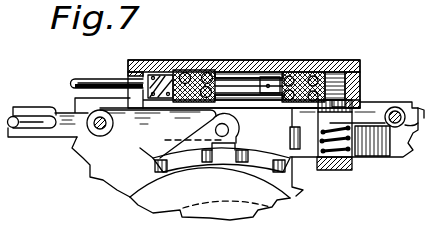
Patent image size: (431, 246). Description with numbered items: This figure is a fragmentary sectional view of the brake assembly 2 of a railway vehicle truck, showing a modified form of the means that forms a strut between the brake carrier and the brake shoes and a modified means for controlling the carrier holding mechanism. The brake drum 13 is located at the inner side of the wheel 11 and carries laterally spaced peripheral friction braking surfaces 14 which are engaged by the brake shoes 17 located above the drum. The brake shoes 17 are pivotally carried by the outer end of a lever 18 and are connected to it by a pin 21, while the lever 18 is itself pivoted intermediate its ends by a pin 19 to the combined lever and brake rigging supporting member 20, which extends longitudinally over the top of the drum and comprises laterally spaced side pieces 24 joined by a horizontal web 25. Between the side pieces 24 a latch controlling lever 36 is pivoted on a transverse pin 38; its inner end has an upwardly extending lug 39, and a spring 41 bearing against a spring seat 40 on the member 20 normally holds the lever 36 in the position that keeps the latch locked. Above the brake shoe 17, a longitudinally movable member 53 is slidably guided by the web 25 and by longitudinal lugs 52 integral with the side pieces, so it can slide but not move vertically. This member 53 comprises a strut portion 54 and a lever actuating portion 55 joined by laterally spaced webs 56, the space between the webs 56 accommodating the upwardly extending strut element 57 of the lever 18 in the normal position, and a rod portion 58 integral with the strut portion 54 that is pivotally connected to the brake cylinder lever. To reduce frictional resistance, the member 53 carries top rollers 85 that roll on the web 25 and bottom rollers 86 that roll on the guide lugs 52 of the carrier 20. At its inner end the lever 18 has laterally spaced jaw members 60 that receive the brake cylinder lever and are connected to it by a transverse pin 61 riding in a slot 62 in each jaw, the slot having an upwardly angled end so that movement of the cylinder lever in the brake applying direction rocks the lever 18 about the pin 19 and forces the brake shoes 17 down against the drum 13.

The brake assembly 2 is at (97, 178).
The wheel 11 is at (87, 168).
The brake drum 13 is at (153, 197).
The peripheral friction braking surfaces 14 is at (303, 188).
The brake shoes 17 is at (188, 165).
The lever 18 is at (72, 128).
The pin 19 is at (103, 130).
The combined lever and brake rigging supporting member 20 is at (362, 158).
The pin 21 is at (227, 137).
The side pieces 24 is at (385, 93).
The web 25 is at (245, 63).
The latch controlling lever 36 is at (417, 110).
The pin 38 is at (395, 107).
The lug 39 is at (335, 100).
The spring seat 40 is at (327, 172).
The spring 41 is at (345, 172).
The lugs 52 is at (312, 102).
The longitudinally movable member 53 is at (173, 68).
The strut portion 54 is at (200, 70).
The lever actuating portion 55 is at (303, 75).
The webs 56 is at (264, 80).
The strut element 57 is at (243, 78).
The rod portion 58 is at (100, 87).
The jaw members 60 is at (25, 108).
The pin 61 is at (37, 122).
The slot 62 is at (13, 124).
The top rollers 85 is at (208, 68).
The bottom rollers 86 is at (295, 104).